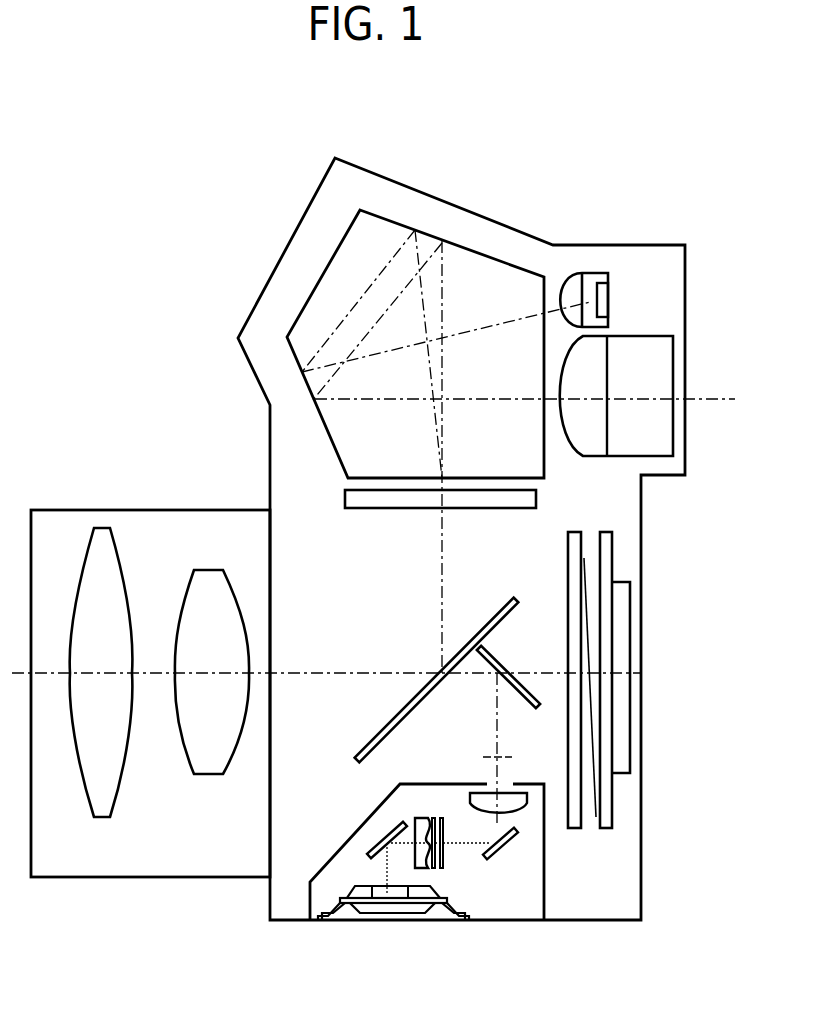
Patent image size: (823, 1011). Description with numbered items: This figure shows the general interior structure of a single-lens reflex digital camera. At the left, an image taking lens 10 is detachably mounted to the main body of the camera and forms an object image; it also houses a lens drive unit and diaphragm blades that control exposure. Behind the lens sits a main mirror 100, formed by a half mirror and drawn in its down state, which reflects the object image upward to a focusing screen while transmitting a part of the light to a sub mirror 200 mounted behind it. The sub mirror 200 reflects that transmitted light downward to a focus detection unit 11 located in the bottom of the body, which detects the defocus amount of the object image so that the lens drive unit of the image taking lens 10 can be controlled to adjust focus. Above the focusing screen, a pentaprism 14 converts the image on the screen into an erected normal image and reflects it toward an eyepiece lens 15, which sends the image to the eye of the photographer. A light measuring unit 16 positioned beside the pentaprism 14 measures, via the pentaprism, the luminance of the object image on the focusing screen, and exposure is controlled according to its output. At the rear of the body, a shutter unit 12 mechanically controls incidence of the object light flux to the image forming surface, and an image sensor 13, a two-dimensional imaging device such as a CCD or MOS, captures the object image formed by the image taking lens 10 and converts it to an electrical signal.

The image taking lens 10 is at (230, 822).
The focus detection unit 11 is at (494, 906).
The shutter unit 12 is at (584, 562).
The image sensor 13 is at (622, 616).
The pentaprism 14 is at (380, 222).
The eyepiece lens 15 is at (587, 372).
The light measuring unit 16 is at (591, 278).
The main mirror 100 is at (499, 606).
The sub mirror 200 is at (518, 676).